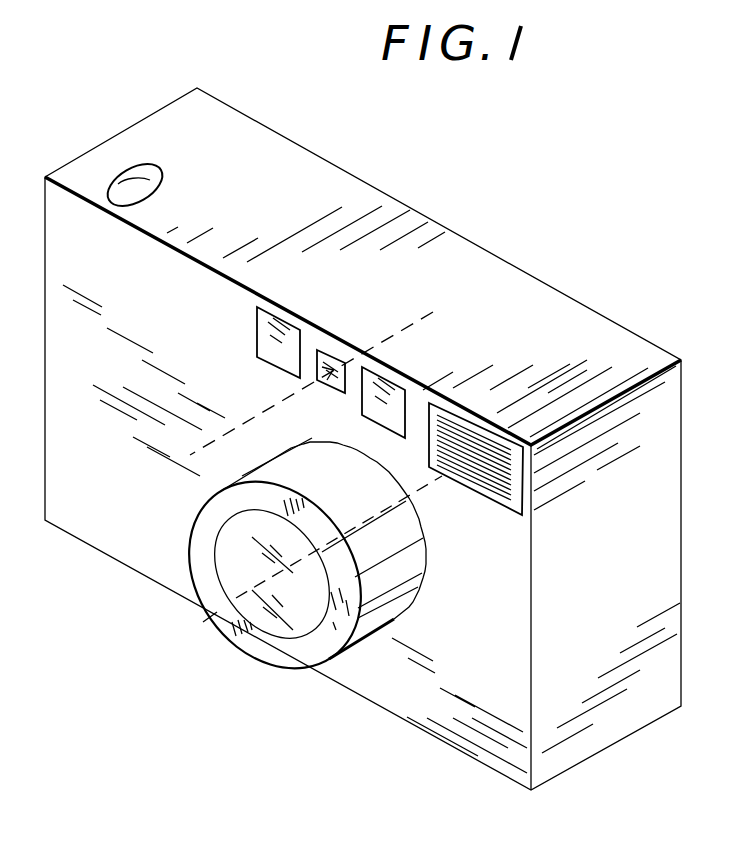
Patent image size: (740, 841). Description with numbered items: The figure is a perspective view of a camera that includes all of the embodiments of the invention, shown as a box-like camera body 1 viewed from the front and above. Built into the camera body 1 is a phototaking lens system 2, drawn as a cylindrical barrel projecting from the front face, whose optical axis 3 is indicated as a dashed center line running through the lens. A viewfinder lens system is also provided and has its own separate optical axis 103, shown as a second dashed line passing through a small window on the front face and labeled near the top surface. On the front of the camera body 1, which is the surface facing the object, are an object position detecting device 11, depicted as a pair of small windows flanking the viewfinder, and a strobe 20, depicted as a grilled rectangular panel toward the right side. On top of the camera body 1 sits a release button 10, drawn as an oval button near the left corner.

The camera body 1 is at (607, 748).
The phototaking lens system 2 is at (275, 670).
The optical axis 3 is at (188, 628).
The release button 10 is at (110, 170).
The object position detecting device 11 is at (295, 322).
The optical axis 103 is at (435, 306).
The strobe 20 is at (470, 493).